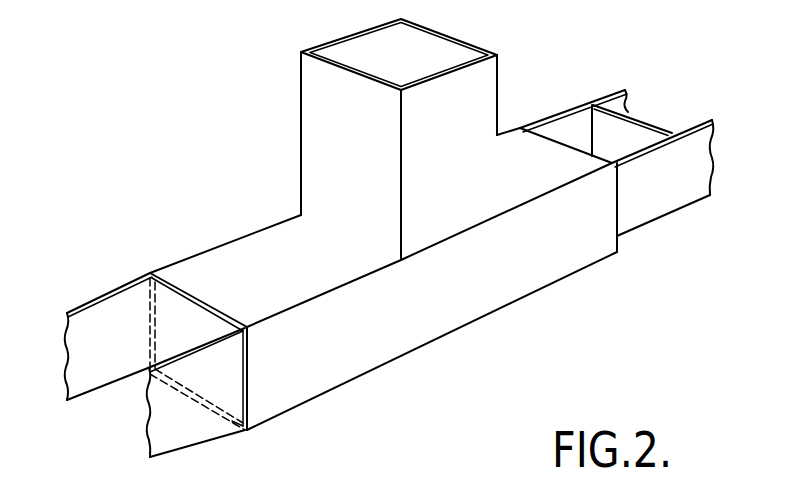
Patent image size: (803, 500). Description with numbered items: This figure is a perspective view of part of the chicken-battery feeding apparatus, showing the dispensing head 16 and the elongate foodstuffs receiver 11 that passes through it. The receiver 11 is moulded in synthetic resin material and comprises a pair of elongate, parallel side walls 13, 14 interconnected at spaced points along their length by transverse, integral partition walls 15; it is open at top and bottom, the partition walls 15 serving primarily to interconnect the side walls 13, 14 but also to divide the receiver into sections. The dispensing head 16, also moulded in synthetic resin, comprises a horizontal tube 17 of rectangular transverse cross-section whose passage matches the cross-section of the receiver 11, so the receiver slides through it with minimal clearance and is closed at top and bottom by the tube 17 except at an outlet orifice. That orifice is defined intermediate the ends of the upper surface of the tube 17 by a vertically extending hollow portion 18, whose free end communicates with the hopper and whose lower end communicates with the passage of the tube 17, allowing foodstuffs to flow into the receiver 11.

The foodstuffs receiver 11 is at (155, 332).
The side wall 13 is at (125, 320).
The side wall 14 is at (198, 417).
The partition wall 15 is at (183, 320).
The dispensing head 16 is at (416, 224).
The horizontal tube 17 is at (375, 330).
The vertically extending hollow portion 18 is at (480, 113).